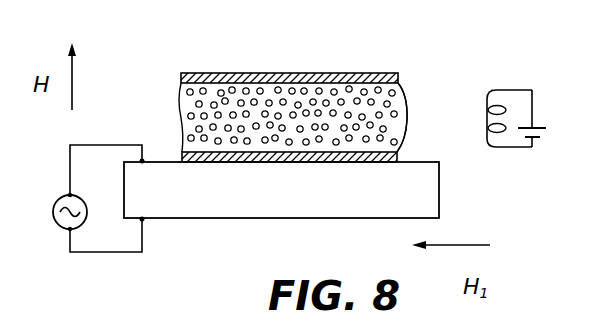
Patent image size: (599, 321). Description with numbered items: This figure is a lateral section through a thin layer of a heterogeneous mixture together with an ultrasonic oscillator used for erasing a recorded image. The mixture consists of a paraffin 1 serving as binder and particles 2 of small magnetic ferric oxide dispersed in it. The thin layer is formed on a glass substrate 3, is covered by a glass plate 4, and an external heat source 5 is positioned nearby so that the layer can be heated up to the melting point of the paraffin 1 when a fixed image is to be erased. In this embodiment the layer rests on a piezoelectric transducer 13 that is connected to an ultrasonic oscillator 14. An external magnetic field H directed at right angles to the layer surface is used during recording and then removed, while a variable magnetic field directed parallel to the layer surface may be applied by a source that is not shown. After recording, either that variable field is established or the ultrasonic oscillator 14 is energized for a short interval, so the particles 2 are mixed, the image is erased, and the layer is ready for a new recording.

The paraffin 1 is at (210, 88).
The particles 2 is at (289, 73).
The glass substrate 3 is at (396, 162).
The glass plate 4 is at (373, 75).
The external heat source 5 is at (510, 76).
The piezoelectric transducer 13 is at (212, 206).
The ultrasonic oscillator 14 is at (57, 186).